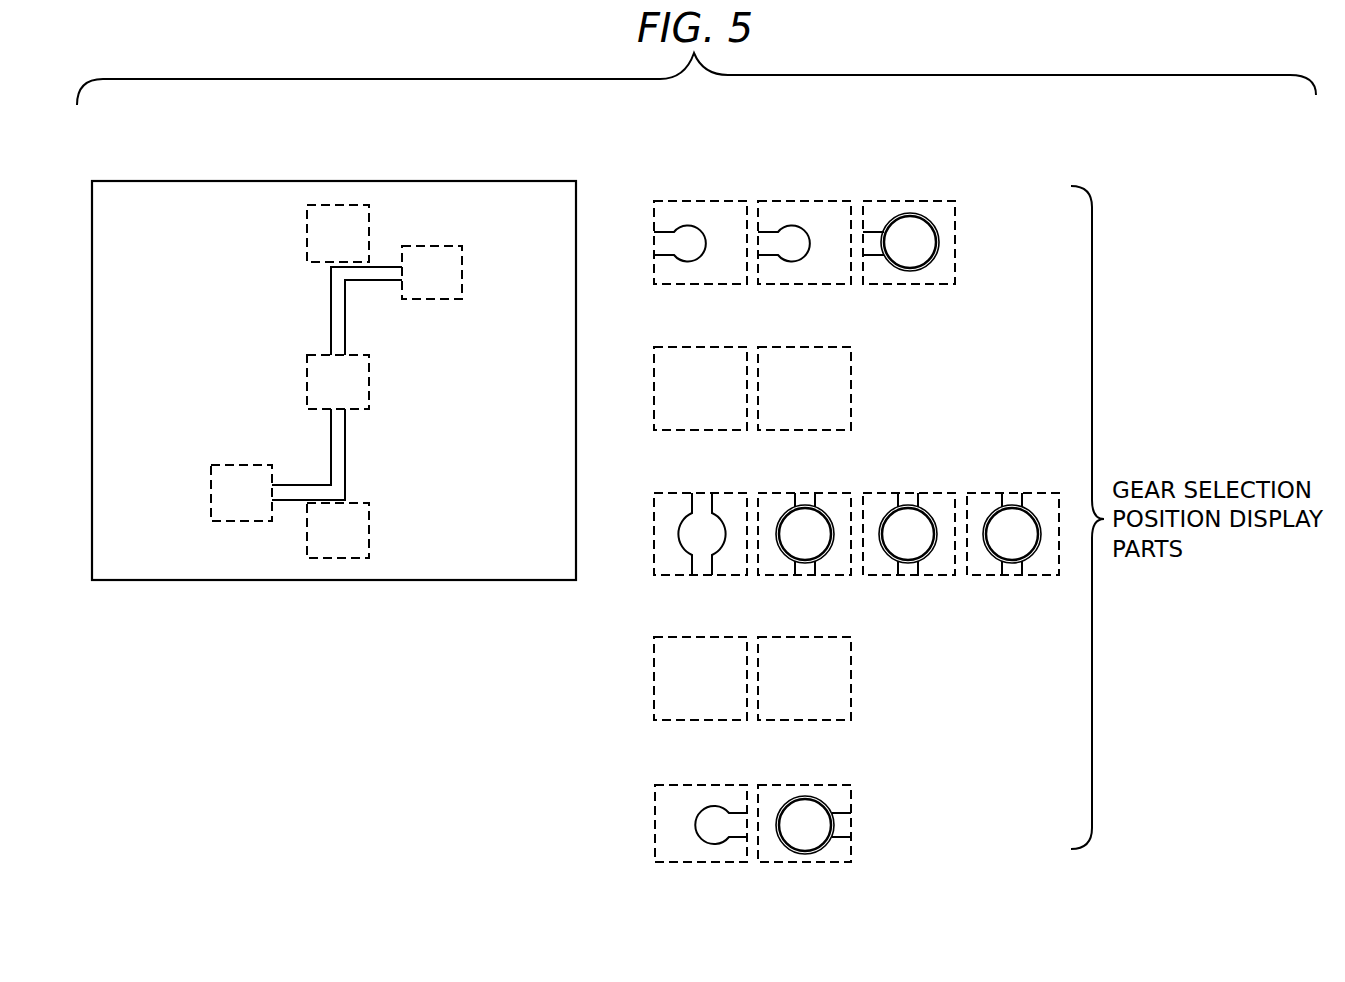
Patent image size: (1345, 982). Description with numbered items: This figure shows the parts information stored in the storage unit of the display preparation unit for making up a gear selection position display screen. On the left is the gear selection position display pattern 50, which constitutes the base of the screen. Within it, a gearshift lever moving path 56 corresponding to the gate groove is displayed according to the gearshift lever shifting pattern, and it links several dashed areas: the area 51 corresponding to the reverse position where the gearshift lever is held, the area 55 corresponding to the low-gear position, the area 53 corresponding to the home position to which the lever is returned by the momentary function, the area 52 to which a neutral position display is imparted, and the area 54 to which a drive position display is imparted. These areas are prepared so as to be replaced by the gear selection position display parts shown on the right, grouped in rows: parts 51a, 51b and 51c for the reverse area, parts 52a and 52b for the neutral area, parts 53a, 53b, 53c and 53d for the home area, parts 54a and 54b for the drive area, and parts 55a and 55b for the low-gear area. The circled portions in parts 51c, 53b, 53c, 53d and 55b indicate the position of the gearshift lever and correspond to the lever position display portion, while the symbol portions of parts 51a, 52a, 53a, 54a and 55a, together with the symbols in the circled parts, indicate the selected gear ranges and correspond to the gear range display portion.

The gear selection position display pattern 50 is at (482, 175).
The reverse position area 51 is at (462, 268).
The neutral position display area 52 is at (369, 213).
The home position area 53 is at (369, 388).
The drive position display area 54 is at (369, 528).
The low-gear position area 55 is at (233, 465).
The gearshift lever moving path 56 is at (345, 327).
The gear selection position display part 51a is at (672, 201).
The gear selection position display part 51b is at (776, 201).
The gear selection position display part 51c is at (880, 201).
The gear selection position display part 52a is at (672, 347).
The gear selection position display part 52b is at (776, 347).
The gear selection position display part 53a is at (672, 493).
The gear selection position display part 53b is at (776, 493).
The gear selection position display part 53c is at (880, 493).
The gear selection position display part 53d is at (984, 493).
The gear selection position display part 54a is at (672, 637).
The gear selection position display part 54b is at (776, 637).
The gear selection position display part 55a is at (672, 785).
The gear selection position display part 55b is at (776, 785).